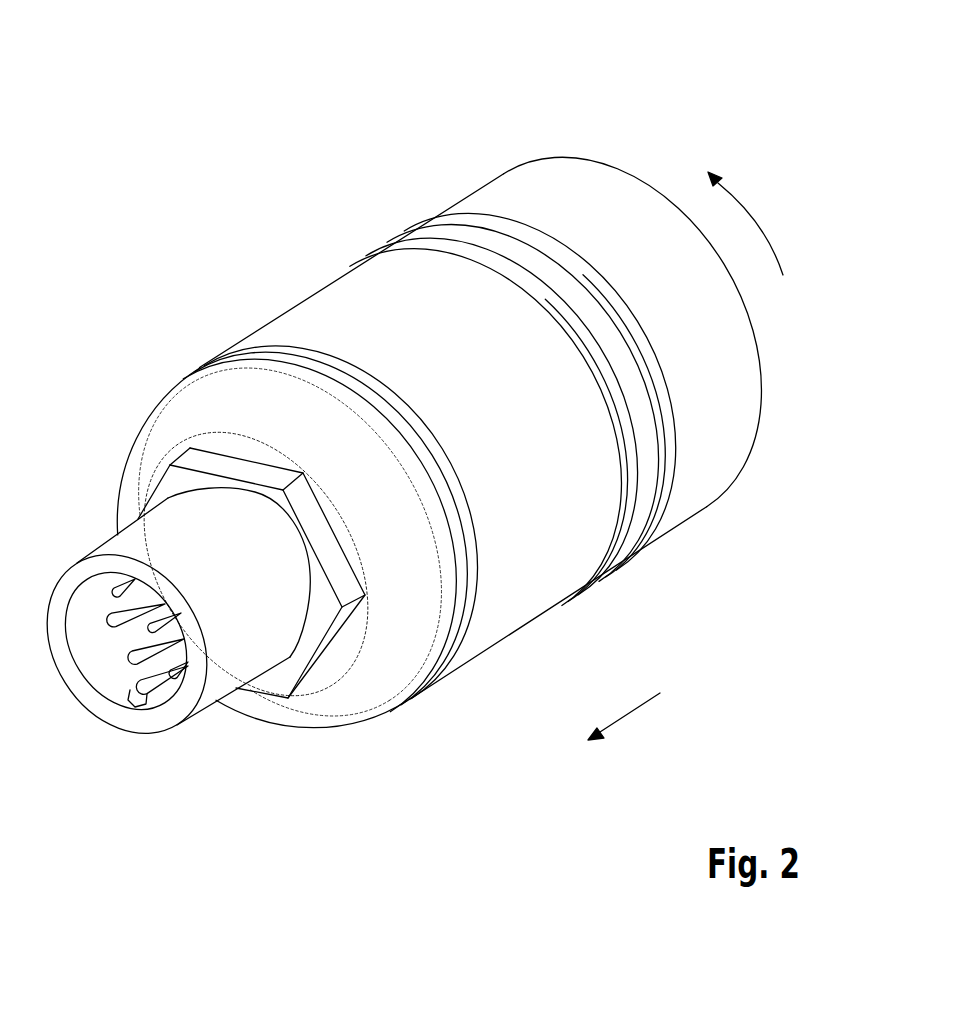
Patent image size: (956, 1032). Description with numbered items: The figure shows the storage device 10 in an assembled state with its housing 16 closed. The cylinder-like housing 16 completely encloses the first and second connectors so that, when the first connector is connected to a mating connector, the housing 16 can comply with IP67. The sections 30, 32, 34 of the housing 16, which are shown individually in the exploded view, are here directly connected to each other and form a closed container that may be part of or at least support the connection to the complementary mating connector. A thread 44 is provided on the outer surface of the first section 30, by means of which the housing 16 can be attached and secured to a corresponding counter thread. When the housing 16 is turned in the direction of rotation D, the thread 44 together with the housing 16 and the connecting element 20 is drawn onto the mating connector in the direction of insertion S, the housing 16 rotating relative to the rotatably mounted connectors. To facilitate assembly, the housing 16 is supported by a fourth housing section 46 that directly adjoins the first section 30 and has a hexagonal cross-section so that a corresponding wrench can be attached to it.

The storage device 10 is at (421, 415).
The housing 16 is at (510, 603).
The connecting element 20 is at (92, 653).
The first section 30 is at (190, 575).
The second section 32 is at (297, 250).
The third section 34 is at (499, 128).
The thread 44 is at (235, 660).
The fourth housing section 46 is at (280, 677).